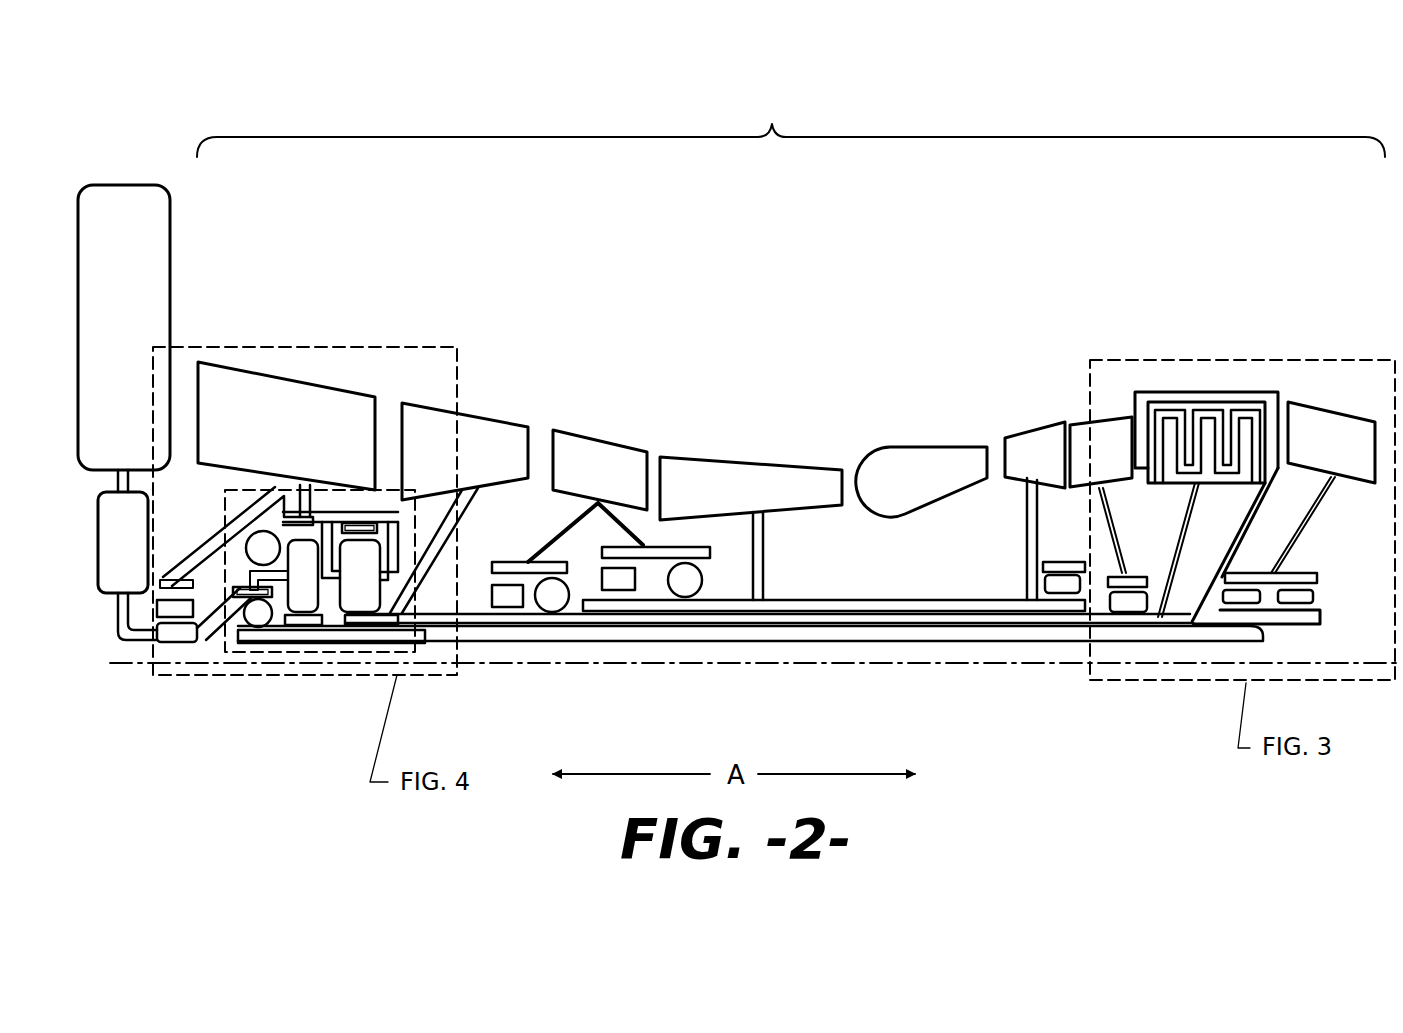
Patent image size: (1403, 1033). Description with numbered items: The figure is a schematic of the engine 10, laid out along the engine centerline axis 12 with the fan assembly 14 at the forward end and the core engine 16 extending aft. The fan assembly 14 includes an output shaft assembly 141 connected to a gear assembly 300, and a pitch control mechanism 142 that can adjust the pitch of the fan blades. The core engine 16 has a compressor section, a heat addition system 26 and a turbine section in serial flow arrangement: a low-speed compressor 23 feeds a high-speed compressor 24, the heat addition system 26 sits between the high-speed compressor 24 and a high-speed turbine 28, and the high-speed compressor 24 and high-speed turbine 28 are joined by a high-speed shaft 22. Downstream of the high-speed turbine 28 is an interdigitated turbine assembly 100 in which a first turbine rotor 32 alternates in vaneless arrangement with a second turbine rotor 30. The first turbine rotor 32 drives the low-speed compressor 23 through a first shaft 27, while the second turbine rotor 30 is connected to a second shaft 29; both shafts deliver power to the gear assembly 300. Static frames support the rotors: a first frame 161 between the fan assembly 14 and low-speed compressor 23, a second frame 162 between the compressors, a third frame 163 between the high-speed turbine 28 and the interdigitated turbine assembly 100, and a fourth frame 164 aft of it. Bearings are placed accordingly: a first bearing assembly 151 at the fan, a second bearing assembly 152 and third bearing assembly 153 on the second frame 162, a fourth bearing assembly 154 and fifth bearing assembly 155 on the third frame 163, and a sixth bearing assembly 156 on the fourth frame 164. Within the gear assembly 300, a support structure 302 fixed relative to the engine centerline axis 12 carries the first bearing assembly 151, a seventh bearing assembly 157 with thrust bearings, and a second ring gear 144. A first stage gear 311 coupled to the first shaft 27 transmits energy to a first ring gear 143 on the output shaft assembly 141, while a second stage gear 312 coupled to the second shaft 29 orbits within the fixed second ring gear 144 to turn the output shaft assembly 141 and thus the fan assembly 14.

The engine 10 is at (968, 95).
The engine centerline axis 12 is at (955, 667).
The fan assembly 14 is at (122, 160).
The core engine 16 is at (791, 120).
The high-speed shaft 22 is at (897, 600).
The low-speed compressor 23 is at (483, 398).
The high-speed compressor 24 is at (733, 445).
The heat addition system 26 is at (925, 440).
The first shaft 27 is at (865, 627).
The high-speed turbine 28 is at (1021, 420).
The second shaft 29 is at (745, 640).
The second turbine rotor 30 is at (1230, 392).
The first turbine rotor 32 is at (1180, 490).
The interdigitated turbine assembly 100 is at (1165, 340).
The output shaft assembly 141 is at (175, 645).
The pitch control mechanism 142 is at (98, 548).
The first ring gear 143 is at (508, 553).
The second ring gear 144 is at (305, 485).
The first bearing assembly 151 is at (205, 640).
The second bearing assembly 152 is at (485, 577).
The third bearing assembly 153 is at (716, 582).
The fourth bearing assembly 154 is at (1050, 560).
The fifth bearing assembly 155 is at (1146, 553).
The sixth bearing assembly 156 is at (1300, 565).
The seventh bearing assembly 157 is at (176, 556).
The first frame 161 is at (245, 368).
The second frame 162 is at (593, 440).
The third frame 163 is at (1100, 420).
The fourth frame 164 is at (1335, 410).
The gear assembly 300 is at (278, 652).
The support structure 302 is at (437, 578).
The first stage gear 311 is at (358, 596).
The second stage gear 312 is at (302, 596).